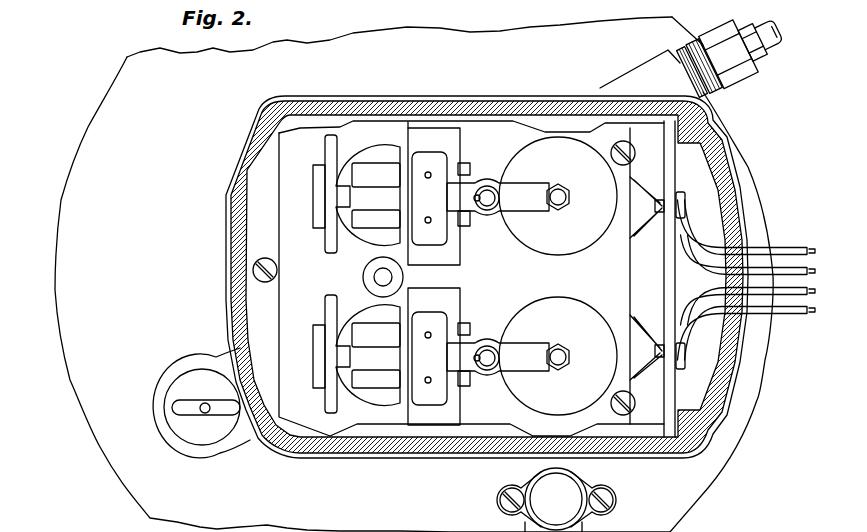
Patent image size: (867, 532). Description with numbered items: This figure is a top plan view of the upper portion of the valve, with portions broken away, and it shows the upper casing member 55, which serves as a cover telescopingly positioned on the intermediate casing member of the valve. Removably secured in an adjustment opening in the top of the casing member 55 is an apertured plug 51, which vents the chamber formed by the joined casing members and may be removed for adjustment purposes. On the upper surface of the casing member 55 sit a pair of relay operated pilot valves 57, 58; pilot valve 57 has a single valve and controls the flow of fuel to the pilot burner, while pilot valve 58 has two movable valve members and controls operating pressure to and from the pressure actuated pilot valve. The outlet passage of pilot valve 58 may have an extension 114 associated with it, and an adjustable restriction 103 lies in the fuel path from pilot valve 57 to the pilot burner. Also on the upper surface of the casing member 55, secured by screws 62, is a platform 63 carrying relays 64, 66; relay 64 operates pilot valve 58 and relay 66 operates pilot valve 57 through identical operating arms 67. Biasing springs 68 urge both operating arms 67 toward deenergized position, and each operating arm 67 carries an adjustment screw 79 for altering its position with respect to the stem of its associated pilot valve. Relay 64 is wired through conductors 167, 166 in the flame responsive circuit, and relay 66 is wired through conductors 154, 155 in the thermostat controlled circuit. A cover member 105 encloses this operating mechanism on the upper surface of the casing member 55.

The extension 114 is at (762, 33).
The cover member 105 is at (233, 209).
The platform 63 is at (262, 310).
The screws 62 is at (272, 261).
The relay 64 is at (368, 238).
The relay 66 is at (362, 315).
The operating arms 67 is at (530, 190).
The biasing springs 68 is at (499, 198).
The adjustment screw 79 is at (568, 197).
The relay operated pilot valve 58 is at (542, 243).
The relay operated pilot valve 57 is at (578, 310).
The apertured plug 51 is at (215, 438).
The adjustable restriction 103 is at (572, 493).
The upper casing member 55 is at (710, 494).
The conductor 167 is at (782, 247).
The conductor 166 is at (792, 267).
The conductor 154 is at (788, 298).
The conductor 155 is at (781, 315).